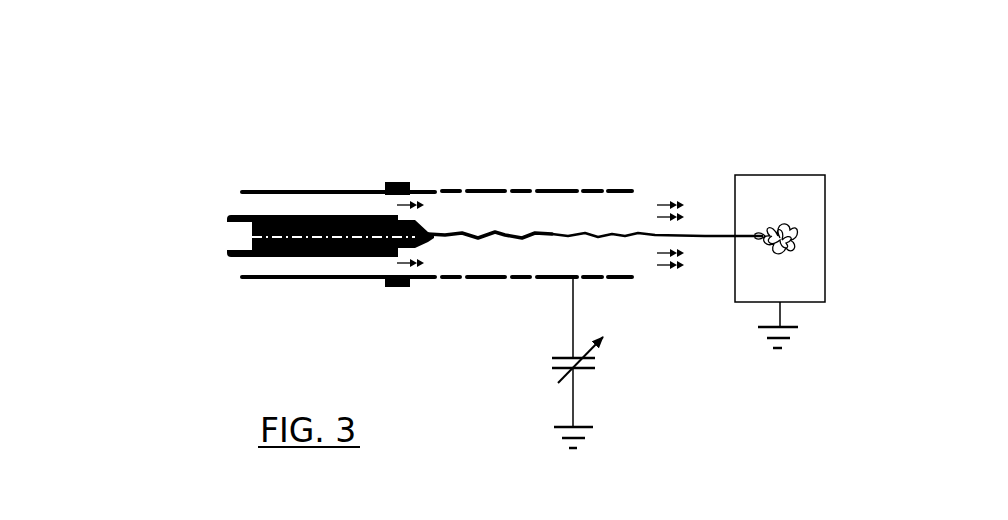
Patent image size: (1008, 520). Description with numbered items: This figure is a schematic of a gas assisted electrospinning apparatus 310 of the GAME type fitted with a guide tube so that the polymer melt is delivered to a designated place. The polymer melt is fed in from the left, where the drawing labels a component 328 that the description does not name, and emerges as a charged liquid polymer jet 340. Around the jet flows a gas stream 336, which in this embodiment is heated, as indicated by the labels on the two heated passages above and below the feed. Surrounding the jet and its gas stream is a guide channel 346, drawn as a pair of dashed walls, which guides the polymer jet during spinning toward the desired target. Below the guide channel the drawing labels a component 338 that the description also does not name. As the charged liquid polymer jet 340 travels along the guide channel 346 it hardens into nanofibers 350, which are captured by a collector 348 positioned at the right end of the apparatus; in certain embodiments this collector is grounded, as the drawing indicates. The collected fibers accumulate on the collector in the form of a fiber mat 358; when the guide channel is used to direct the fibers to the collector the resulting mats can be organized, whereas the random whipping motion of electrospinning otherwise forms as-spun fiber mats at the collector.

The gas assisted electrospinning apparatus 310 is at (310, 71).
The polymer feed body 328 is at (251, 237).
The gas stream 336 is at (248, 208).
The liquid polymer jet 340 is at (441, 243).
The guide channel 346 is at (551, 188).
The collector 348 is at (825, 212).
The hardened nanofibers 350 is at (705, 238).
The fiber mat 358 is at (777, 210).
The high voltage source 338 is at (601, 401).